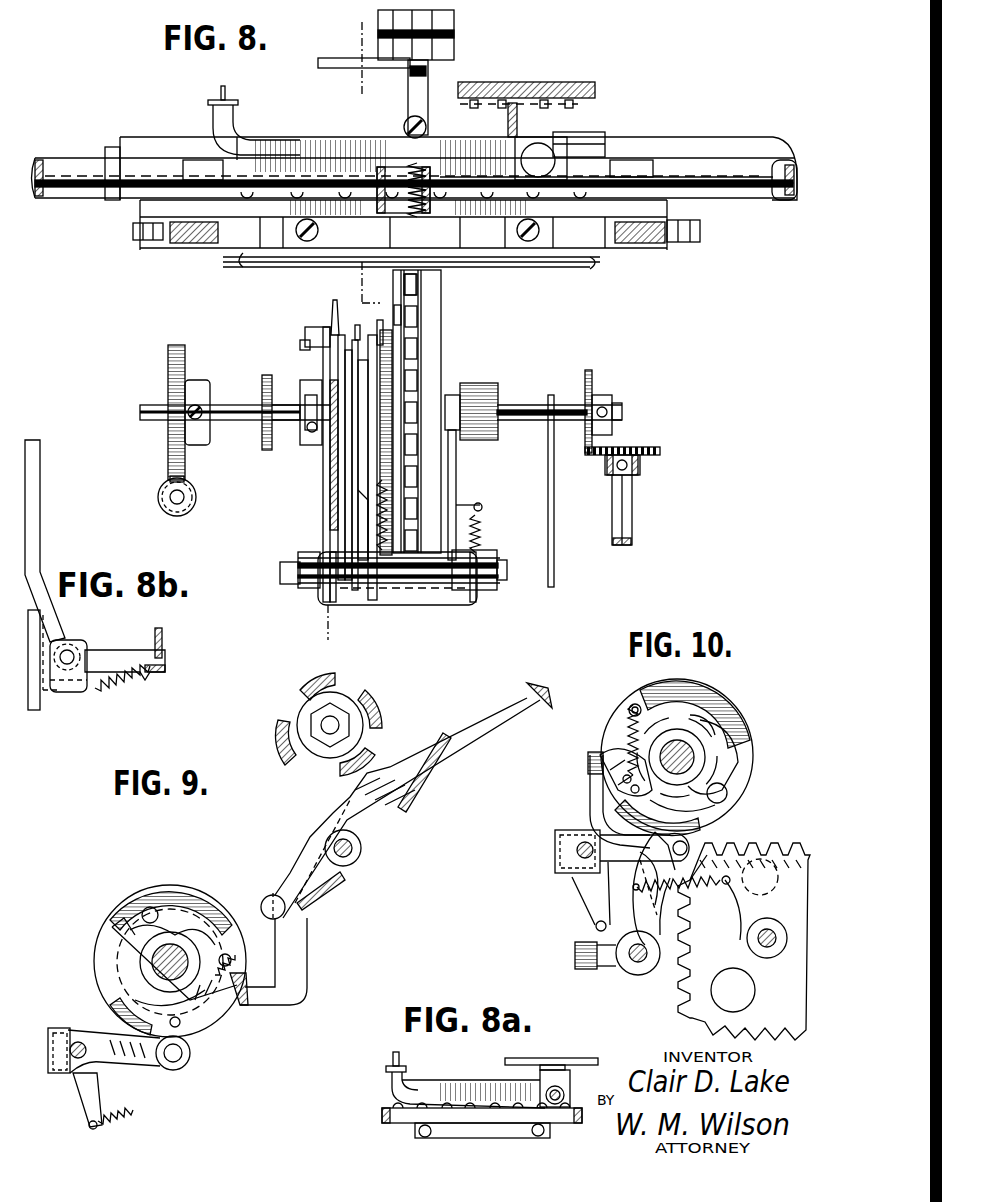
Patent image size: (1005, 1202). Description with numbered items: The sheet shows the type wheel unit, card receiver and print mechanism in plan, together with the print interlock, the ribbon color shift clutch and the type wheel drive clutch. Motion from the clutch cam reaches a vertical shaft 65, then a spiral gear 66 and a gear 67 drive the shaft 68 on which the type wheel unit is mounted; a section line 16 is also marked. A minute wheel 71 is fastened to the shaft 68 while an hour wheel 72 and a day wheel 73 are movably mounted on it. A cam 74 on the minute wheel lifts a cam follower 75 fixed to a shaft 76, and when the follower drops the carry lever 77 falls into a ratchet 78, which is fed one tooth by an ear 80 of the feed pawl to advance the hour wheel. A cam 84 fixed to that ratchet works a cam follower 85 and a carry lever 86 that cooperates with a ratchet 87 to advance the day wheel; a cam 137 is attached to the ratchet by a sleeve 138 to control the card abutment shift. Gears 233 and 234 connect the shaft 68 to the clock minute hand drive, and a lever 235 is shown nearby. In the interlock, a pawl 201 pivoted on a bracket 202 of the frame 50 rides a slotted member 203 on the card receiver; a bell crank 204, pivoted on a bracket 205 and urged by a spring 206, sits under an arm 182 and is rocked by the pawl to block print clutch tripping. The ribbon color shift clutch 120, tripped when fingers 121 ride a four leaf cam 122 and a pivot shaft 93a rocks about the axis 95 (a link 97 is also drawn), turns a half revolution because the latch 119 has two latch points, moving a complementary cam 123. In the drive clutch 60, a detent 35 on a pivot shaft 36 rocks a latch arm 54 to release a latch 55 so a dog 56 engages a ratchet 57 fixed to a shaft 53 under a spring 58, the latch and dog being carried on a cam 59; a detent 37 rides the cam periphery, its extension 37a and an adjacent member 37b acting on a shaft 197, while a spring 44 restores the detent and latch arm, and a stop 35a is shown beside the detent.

In FIG. 8, the section line 16- 16 is at (315, 33).
In FIG. 8, the pawl 201 is at (334, 145).
In FIG. 8A, the pawl 201 is at (493, 1090).
In FIG. 8, the bracket 202 is at (518, 120).
In FIG. 8, the slotted member 203 is at (250, 200).
In FIG. 8A, the slotted member 203 is at (565, 1082).
In FIG. 8, the bell crank 204 is at (226, 95).
In FIG. 8B, the bell crank 204 is at (33, 477).
In FIG. 8A, the bell crank 204 is at (398, 1060).
In FIG. 8, the minute wheel 71 is at (441, 302).
In FIG. 8, the hour wheel 72 is at (405, 290).
In FIG. 8, the day wheel 73 is at (399, 316).
In FIG. 8, the cam 74 is at (450, 393).
In FIG. 8, the cam follower 75 is at (457, 497).
In FIG. 8, the shaft 76 is at (280, 570).
In FIG. 8, the carry lever 77 is at (325, 475).
In FIG. 8, the ratchet 78 is at (330, 304).
In FIG. 8, the ear 80 is at (330, 330).
In FIG. 8, the cam 84 is at (335, 415).
In FIG. 8, the cam follower 85 is at (348, 478).
In FIG. 8, the carry lever 86 is at (362, 490).
In FIG. 8, the ratchet 87 is at (375, 330).
In FIG. 8, the gear 67 is at (168, 355).
In FIG. 8, the shaft 68 is at (222, 400).
In FIG. 8, the cam 137 is at (264, 372).
In FIG. 8, the sleeve 138 is at (285, 400).
In FIG. 8, the spiral gear 66 is at (158, 493).
In FIG. 8, the vertical shaft 65 is at (175, 505).
In FIG. 8, the gear 233 is at (593, 380).
In FIG. 8, the gear 234 is at (626, 447).
In FIG. 8, the lever 235 is at (632, 505).
In FIG. 8B, the arm 182 is at (163, 641).
In FIG. 8B, the bracket 205 is at (80, 695).
In FIG. 8B, the spring 206 is at (122, 682).
In FIG. 8B, the frame 50 is at (42, 710).
In FIG. 10, the frame 50 is at (757, 882).
In FIG. 8A, the frame 50 is at (565, 1044).
In FIG. 9, the four leaf cam 122 is at (298, 680).
In FIG. 9, the fingers 121 is at (480, 730).
In FIG. 9, the link 97 is at (410, 806).
In FIG. 9, the axis 95 is at (360, 851).
In FIG. 9, the pivot shaft 93a is at (287, 910).
In FIG. 9, the ribbon color shift clutch 120 is at (172, 880).
In FIG. 9, the latch 119 is at (112, 927).
In FIG. 9, the complementary cam 123 is at (117, 966).
In FIG. 9, the shaft 53 is at (182, 972).
In FIG. 10, the shaft 53 is at (673, 740).
In FIG. 9, the shaft 197 is at (75, 1058).
In FIG. 10, the shaft 197 is at (580, 852).
In FIG. 10, the type wheel and program drive clutch 60 is at (760, 750).
In FIG. 10, the cam 59 is at (702, 717).
In FIG. 10, the ratchet 57 is at (706, 745).
In FIG. 10, the dog 56 is at (722, 812).
In FIG. 10, the spring 58 is at (625, 722).
In FIG. 10, the latch 55 is at (620, 763).
In FIG. 10, the latch arm 54 is at (592, 780).
In FIG. 10, the detent 37 is at (640, 850).
In FIG. 10, the member 37b is at (572, 872).
In FIG. 10, the extension 37a is at (582, 900).
In FIG. 10, the spring 44 is at (690, 896).
In FIG. 10, the detent 35 is at (665, 930).
In FIG. 10, the stop 35a is at (586, 969).
In FIG. 10, the pivot shaft 36 is at (640, 960).